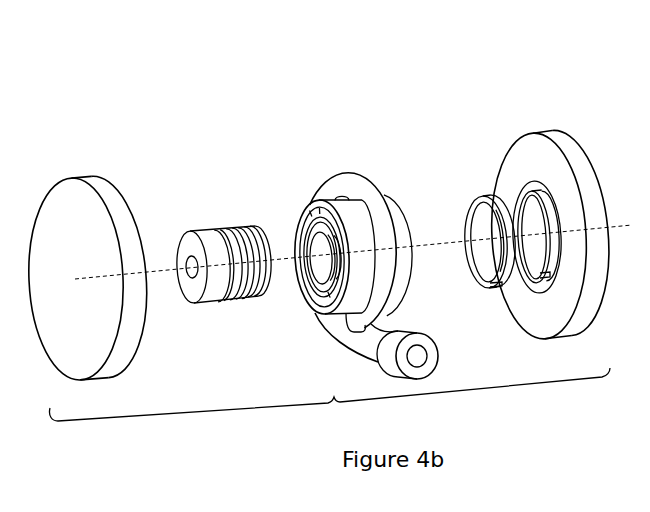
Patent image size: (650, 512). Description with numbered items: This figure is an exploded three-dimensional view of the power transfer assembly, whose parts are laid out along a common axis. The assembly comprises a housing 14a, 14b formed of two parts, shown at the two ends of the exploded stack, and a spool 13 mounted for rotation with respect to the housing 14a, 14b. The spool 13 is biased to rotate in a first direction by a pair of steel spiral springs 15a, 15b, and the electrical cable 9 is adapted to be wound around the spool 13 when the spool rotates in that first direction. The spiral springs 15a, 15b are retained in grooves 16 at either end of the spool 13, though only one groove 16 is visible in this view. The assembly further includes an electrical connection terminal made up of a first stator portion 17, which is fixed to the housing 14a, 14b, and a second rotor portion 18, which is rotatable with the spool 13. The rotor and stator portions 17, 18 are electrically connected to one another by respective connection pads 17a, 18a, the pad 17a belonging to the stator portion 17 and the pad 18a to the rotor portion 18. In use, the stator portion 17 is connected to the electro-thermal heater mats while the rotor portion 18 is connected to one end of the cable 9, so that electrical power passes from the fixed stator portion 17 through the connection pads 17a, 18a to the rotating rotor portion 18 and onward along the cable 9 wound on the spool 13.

The electrical cable 9 is at (370, 194).
The spool 13 is at (343, 197).
The housing 14a is at (60, 200).
The housing 14b is at (570, 152).
The steel spiral spring 15a is at (489, 199).
The steel spiral spring 15b is at (530, 188).
The groove 16 is at (308, 206).
The first stator portion 17 is at (188, 243).
The connection pad 17a is at (225, 231).
The second rotor portion 18 is at (310, 302).
The connection pad 18a is at (310, 245).